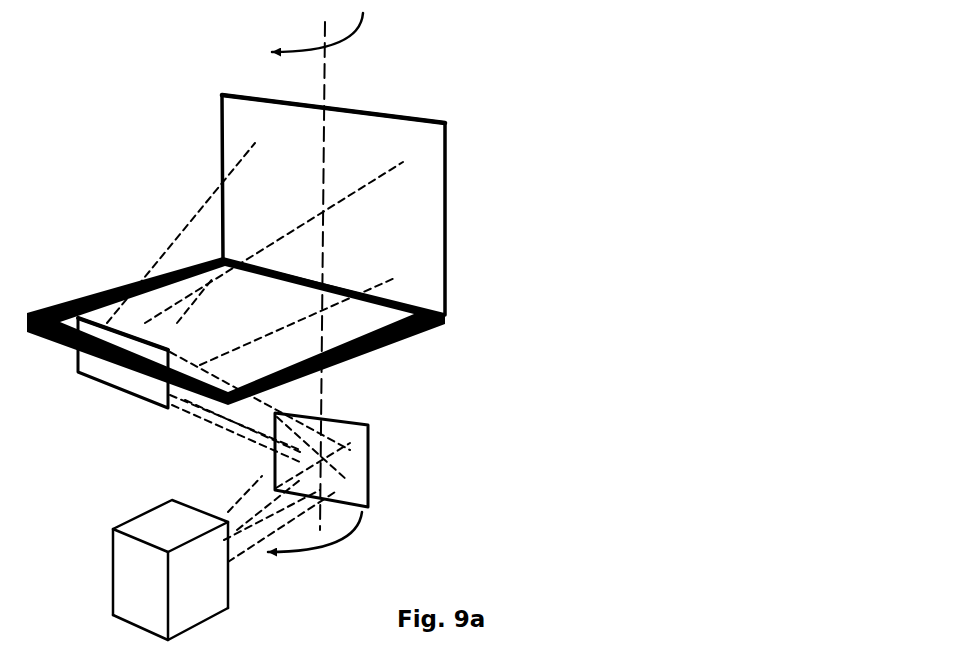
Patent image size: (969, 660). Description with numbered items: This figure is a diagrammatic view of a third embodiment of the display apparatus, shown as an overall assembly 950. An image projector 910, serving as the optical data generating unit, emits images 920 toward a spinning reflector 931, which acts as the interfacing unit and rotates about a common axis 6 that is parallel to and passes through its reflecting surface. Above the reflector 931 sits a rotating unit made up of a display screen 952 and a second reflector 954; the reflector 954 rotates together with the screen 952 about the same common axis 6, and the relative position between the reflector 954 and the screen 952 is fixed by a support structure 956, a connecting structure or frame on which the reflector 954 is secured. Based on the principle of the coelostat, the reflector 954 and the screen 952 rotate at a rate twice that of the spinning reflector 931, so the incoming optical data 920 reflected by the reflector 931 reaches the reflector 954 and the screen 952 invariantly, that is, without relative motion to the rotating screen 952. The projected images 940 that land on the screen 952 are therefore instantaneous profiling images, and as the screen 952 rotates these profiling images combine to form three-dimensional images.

The common axis 6 is at (332, 63).
The image projector 910 is at (207, 577).
The images 920 is at (240, 498).
The reflector 931 is at (372, 470).
The projected images 940 is at (207, 423).
The display assembly 950 is at (545, 164).
The display screen 952 is at (432, 205).
The reflector 954 is at (100, 380).
The support structure 956 is at (108, 290).